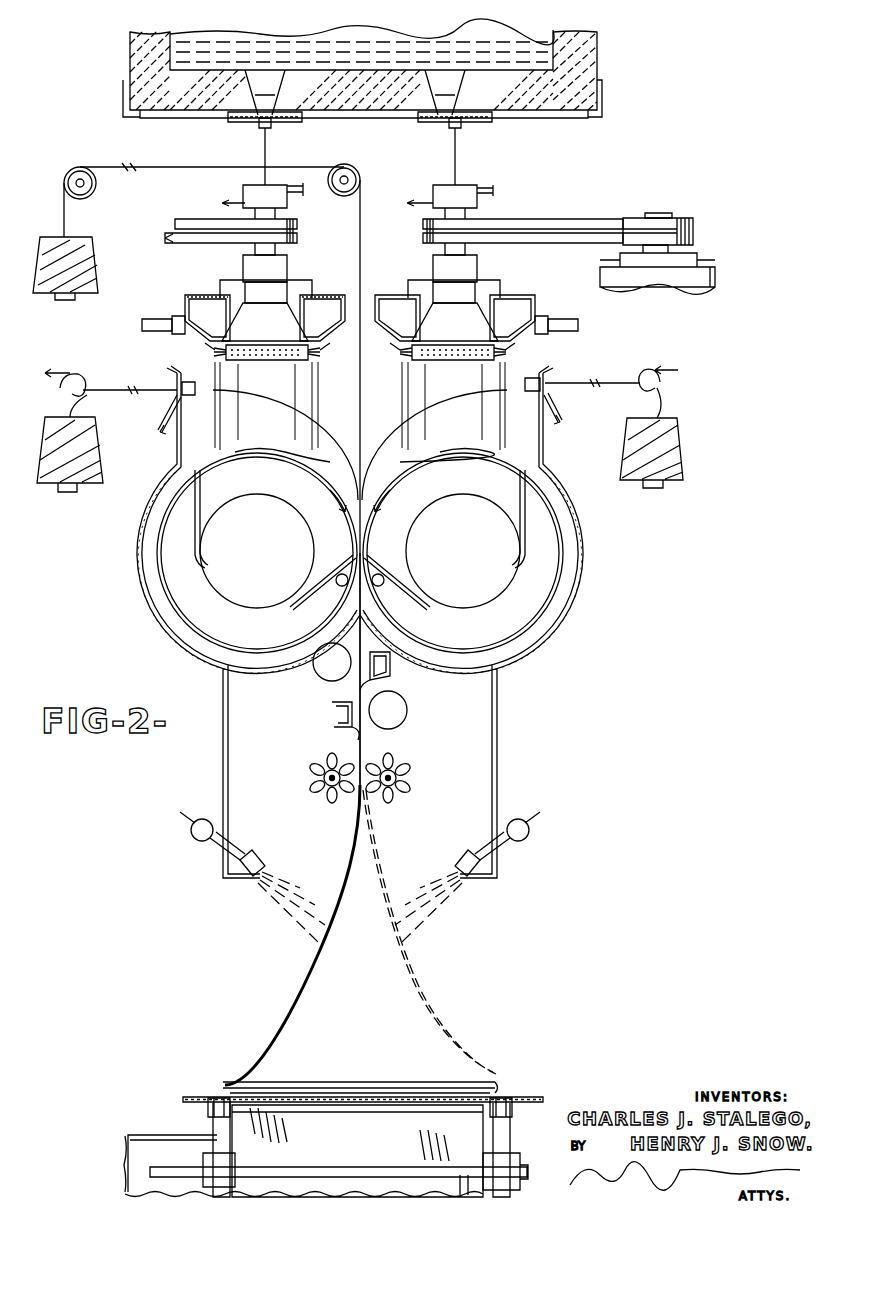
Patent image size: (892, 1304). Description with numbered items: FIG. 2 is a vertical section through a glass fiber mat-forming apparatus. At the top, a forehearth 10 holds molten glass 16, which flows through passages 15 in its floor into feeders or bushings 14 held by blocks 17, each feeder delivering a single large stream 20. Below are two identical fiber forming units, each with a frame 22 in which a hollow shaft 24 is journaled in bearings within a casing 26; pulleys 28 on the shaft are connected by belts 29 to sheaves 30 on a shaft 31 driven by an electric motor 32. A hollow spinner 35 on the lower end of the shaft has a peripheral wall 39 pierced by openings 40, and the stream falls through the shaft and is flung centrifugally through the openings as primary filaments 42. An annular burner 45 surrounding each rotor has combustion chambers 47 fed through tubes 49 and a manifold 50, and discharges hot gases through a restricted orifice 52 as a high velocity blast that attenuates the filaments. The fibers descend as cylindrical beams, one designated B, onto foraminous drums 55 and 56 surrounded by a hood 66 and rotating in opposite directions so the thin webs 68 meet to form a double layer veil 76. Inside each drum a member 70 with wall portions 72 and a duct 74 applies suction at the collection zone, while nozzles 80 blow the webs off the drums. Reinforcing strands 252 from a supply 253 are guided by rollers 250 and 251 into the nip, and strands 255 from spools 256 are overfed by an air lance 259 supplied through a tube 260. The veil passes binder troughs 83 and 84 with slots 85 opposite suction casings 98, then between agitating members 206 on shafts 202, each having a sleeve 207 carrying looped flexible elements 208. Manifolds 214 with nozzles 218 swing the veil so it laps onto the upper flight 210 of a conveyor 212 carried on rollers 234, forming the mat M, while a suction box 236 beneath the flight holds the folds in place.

The forehearth 10 is at (597, 50).
The molten glass 16 is at (364, 62).
The passages 15 is at (440, 84).
The blocks 17 is at (494, 124).
The feeders or bushings 14 is at (462, 126).
The stream of glass 20 is at (456, 156).
The pulleys or sheaves 28 is at (480, 228).
The belts 29 is at (545, 238).
The sheaves or pulleys 30 is at (694, 230).
The shaft 31 is at (660, 213).
The electric motor 32 is at (700, 274).
The casing 26 is at (468, 270).
The frame 22 is at (490, 284).
The shaft 24 is at (465, 292).
The combustion zones or chambers 47 is at (360, 318).
The rotor or spinner 35 is at (360, 322).
The peripheral wall 39 is at (465, 362).
The openings or orifices 40 is at (435, 360).
The primary filaments 42 is at (506, 352).
The restricted orifice 52 is at (520, 344).
The internal combustion burner 45 is at (540, 330).
The tubes 49 is at (560, 318).
The manifold 50 is at (548, 318).
The reinforcing material 252 is at (369, 410).
The guide rollers 251 is at (96, 185).
The guide rollers 250 is at (361, 176).
The supply 253 is at (84, 244).
The strands, yarns or threads 255 is at (618, 390).
The supply spools 256 is at (700, 428).
The air lance or blower 259 is at (546, 396).
The tube 260 is at (566, 414).
The beam of fibers B is at (496, 396).
The layers, webs or groups of fibers 68 is at (465, 450).
The rotating drum 55 is at (160, 532).
The rotating drum 56 is at (560, 552).
The housing, enclosure or hood 66 is at (571, 622).
The receptacles or members 70 is at (534, 559).
The duct 74 is at (360, 551).
The wall portions 72 is at (370, 562).
The nozzles 80 is at (382, 586).
The double layer veil or web 76 is at (361, 636).
The cylindrical casing 98 is at (408, 712).
The binder dispenser or applicator 83 is at (391, 664).
The binder dispenser or applicator 84 is at (332, 712).
The slot 85 is at (356, 732).
The shafts 202 is at (405, 775).
The sleeve or cylinder 207 is at (318, 768).
The flexible elements 208 is at (315, 776).
The veil agitating or vibrating member 206 is at (418, 807).
The manifolds or pipes 214 is at (530, 828).
The nozzles 218 is at (470, 878).
The mat M is at (454, 1073).
The conveyor 212 is at (182, 1096).
The upper flight 210 is at (510, 1100).
The rollers 234 is at (212, 1125).
The receptacle or box 236 is at (382, 1140).